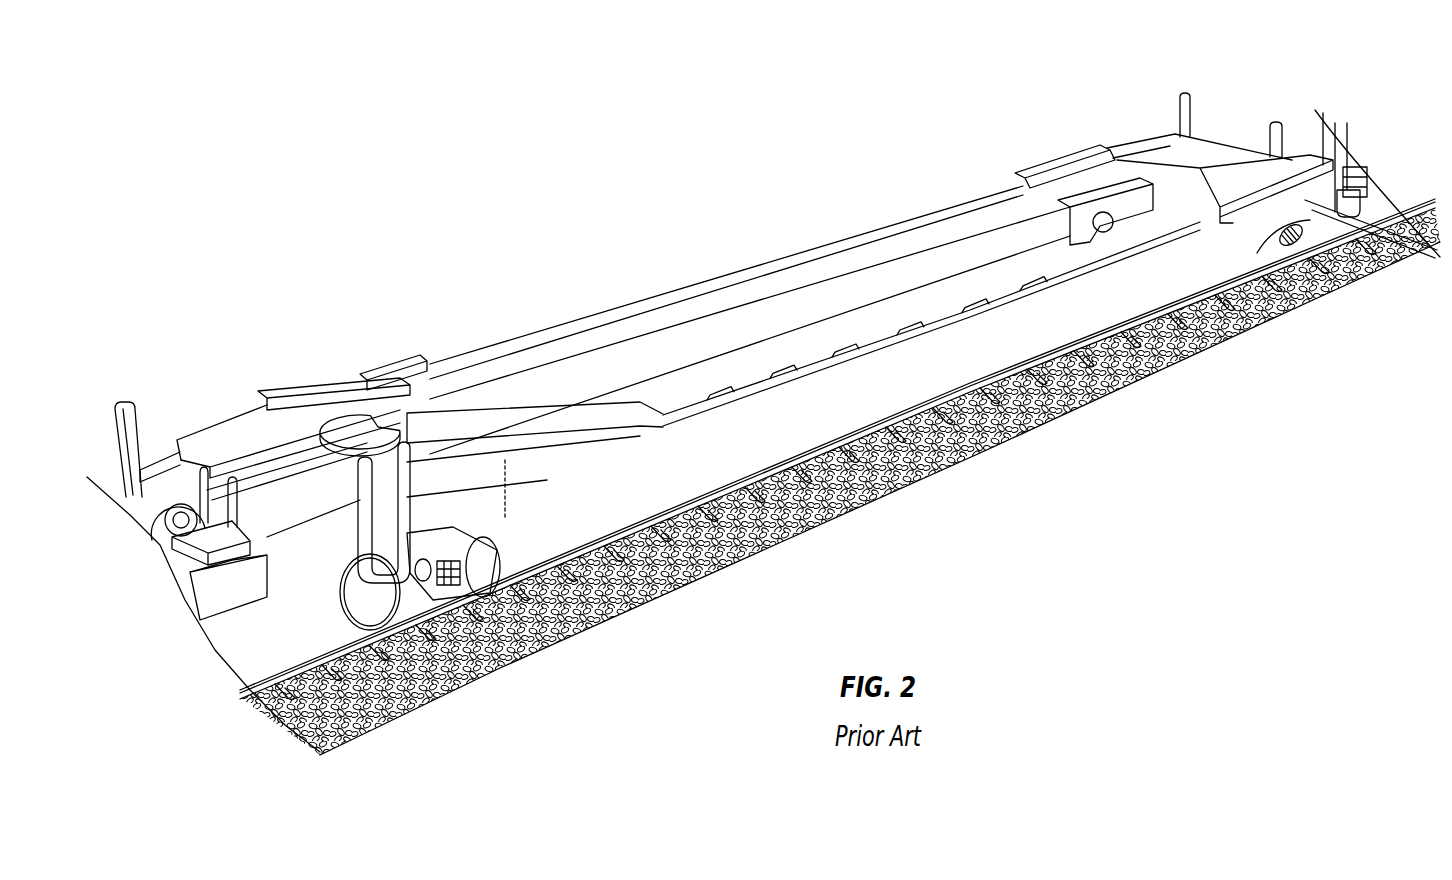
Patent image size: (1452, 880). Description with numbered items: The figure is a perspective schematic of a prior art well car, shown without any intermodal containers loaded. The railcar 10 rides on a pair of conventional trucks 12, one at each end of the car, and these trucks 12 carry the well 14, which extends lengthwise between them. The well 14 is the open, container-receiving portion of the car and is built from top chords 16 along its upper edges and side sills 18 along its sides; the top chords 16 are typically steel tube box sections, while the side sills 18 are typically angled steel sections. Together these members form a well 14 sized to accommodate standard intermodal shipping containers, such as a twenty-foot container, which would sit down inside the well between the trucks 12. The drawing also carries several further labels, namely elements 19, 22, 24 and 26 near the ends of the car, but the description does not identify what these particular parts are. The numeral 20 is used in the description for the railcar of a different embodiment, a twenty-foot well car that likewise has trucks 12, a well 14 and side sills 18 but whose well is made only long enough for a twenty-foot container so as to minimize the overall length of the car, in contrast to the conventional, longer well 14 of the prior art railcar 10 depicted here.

The railcar 10 is at (345, 241).
The trucks 12 is at (480, 575).
The well 14 is at (836, 311).
The top chords 16 is at (582, 327).
The side sills 18 is at (768, 451).
The truck 19 is at (347, 557).
The railcar 20 is at (180, 480).
The end platform 22 is at (250, 427).
The end bulkhead 24 is at (312, 406).
The side beam block 26 is at (380, 372).